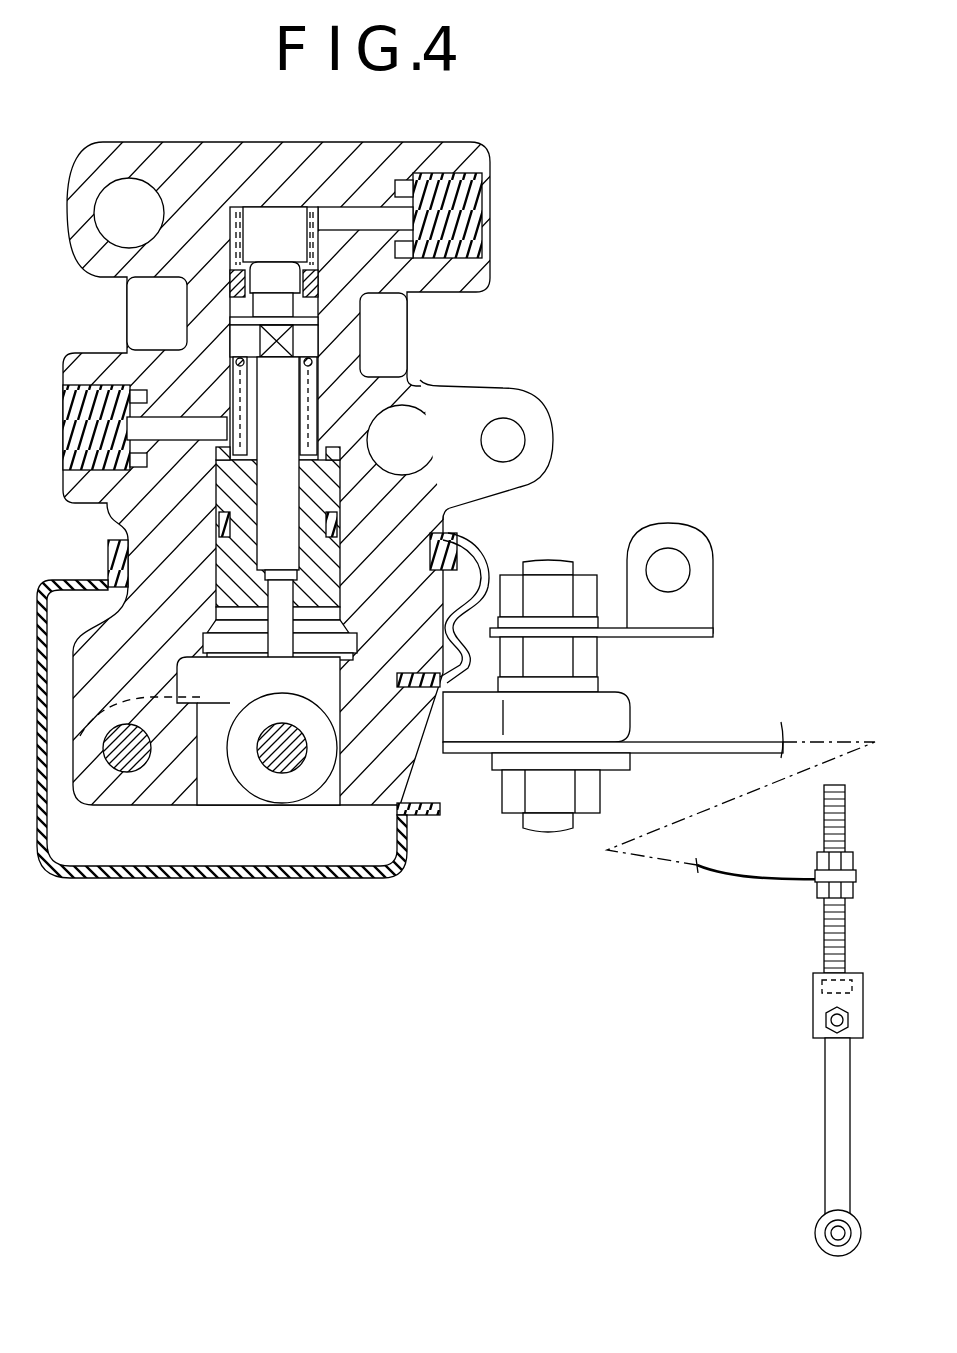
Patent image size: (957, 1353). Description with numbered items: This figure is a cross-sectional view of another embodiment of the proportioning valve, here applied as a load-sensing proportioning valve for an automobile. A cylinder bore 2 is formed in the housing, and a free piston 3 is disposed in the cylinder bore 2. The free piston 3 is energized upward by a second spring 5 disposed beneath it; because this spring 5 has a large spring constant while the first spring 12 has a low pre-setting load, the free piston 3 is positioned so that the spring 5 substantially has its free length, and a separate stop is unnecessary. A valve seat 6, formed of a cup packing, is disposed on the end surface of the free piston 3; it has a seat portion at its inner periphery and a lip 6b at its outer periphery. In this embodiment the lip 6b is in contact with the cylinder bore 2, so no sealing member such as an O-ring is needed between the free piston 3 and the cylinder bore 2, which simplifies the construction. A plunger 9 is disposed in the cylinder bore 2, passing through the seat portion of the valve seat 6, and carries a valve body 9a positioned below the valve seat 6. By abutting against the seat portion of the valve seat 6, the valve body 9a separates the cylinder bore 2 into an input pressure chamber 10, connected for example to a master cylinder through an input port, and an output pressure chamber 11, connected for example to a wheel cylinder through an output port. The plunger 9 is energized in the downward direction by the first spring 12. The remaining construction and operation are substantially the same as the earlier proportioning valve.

The cylinder bore 2 is at (318, 258).
The free piston 3 is at (322, 283).
The spring (second spring) 5 is at (250, 270).
The valve seat 6 is at (232, 308).
The lip 6b is at (322, 322).
The plunger 9 is at (290, 459).
The valve body 9a is at (242, 298).
The input pressure chamber 10 is at (227, 428).
The output pressure chamber 11 is at (293, 210).
The spring (first spring) 12 is at (332, 392).